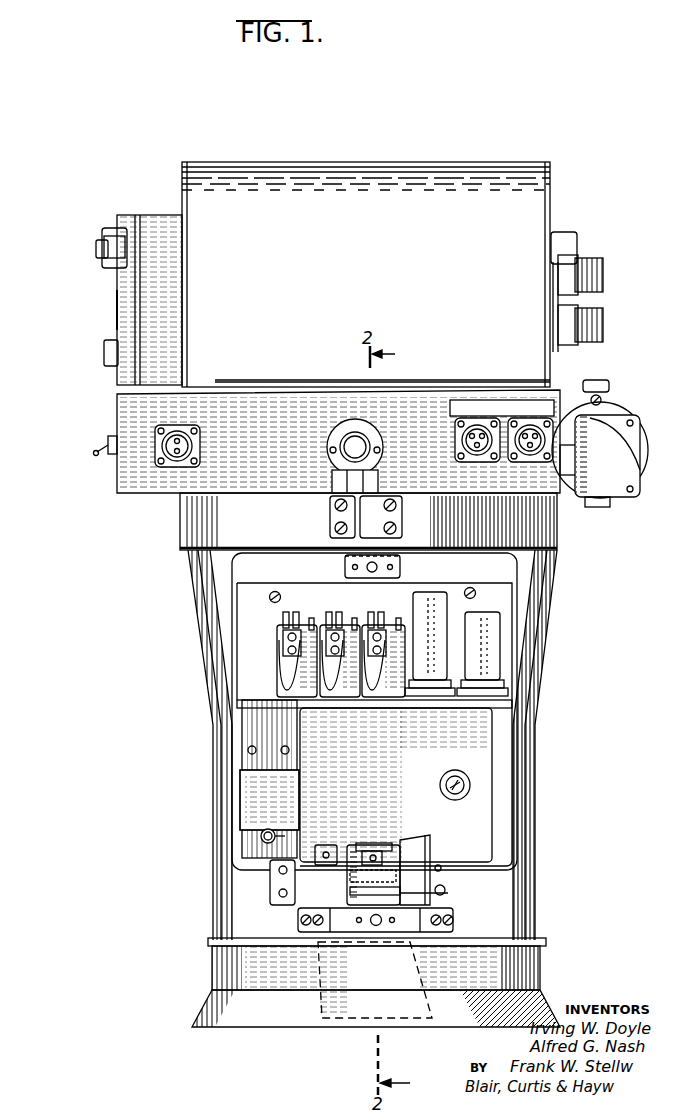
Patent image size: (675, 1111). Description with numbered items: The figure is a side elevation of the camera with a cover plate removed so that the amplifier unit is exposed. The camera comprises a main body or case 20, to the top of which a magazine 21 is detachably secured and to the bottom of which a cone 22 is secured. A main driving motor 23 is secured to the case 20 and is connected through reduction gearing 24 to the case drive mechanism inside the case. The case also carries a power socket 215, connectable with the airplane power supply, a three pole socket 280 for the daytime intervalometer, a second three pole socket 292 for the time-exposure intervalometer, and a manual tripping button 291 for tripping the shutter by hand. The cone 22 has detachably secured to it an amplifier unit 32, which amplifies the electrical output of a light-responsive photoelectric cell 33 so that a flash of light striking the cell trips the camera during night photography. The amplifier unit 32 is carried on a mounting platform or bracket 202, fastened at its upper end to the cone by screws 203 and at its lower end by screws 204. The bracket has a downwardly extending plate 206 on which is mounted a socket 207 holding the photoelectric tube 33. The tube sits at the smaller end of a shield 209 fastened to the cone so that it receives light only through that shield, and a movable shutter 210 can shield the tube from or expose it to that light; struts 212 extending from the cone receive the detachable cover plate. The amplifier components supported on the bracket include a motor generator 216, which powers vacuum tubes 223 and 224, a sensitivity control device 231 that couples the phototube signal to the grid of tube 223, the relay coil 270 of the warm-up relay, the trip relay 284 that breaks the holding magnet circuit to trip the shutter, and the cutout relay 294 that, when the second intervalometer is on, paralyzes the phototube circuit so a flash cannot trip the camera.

The main body or case 20 is at (138, 518).
The magazine 21 is at (172, 180).
The cone 22 is at (205, 866).
The main driving motor 23 is at (622, 395).
The reduction gearing 24 is at (612, 485).
The amplifier unit 32 is at (268, 682).
The photoelectric cell 33 is at (347, 880).
The mounting platform or bracket 202 is at (298, 572).
The screws 203 is at (273, 592).
The screws 204 is at (279, 872).
The downwardly extending plate 206 is at (446, 894).
The socket 207 is at (417, 862).
The shield 209 is at (344, 1025).
The shutter 210 is at (333, 848).
The struts 212 is at (400, 568).
The socket 215 is at (200, 443).
The motor generator 216 is at (258, 790).
The vacuum tube 223 is at (480, 622).
The vacuum tube 224 is at (418, 604).
The sensitivity control device 231 is at (470, 800).
The relay coil 270 is at (393, 665).
The three pole socket 280 is at (526, 462).
The trip relay 284 is at (348, 680).
The manual tripping button 291 is at (106, 443).
The three pole socket 292 is at (455, 438).
The cutout relay 294 is at (306, 680).